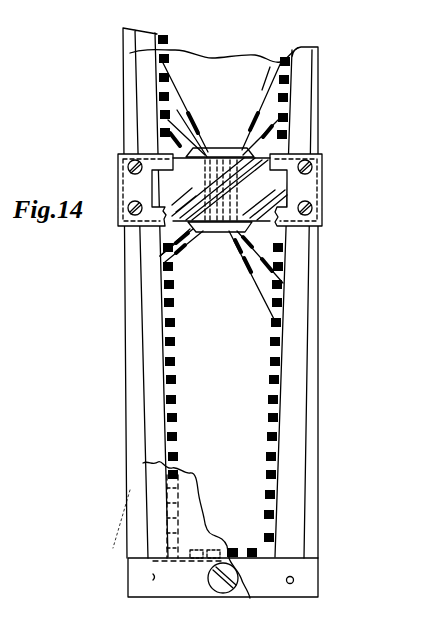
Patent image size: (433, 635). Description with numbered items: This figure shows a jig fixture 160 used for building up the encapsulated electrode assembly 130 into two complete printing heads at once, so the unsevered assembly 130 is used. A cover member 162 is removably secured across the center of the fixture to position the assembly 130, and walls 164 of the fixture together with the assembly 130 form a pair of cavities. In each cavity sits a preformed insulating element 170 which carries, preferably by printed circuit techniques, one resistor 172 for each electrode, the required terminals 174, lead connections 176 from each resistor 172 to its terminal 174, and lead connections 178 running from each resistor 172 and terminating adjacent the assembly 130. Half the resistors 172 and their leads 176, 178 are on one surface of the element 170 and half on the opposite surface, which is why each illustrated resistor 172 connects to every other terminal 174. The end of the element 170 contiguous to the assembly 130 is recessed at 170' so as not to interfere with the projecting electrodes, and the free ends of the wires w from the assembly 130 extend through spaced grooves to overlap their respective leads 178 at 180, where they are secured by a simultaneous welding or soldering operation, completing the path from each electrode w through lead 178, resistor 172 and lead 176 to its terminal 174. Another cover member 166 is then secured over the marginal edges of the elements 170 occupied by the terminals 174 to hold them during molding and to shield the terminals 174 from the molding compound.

The encapsulated electrode assembly 130 is at (293, 152).
The jig fixture 160 is at (320, 369).
The cover member 162 is at (118, 157).
The walls 164 is at (292, 84).
The cover member 166 is at (155, 500).
The preformed insulating element 170 is at (313, 228).
The recessed end of insulating element 170' is at (120, 246).
The resistors 172 is at (168, 120).
The terminals 174 is at (160, 57).
The lead connections 176 is at (163, 60).
The lead connections 178 is at (200, 130).
The overlap and welding or soldering connection 180 is at (243, 255).
The wires w is at (243, 137).